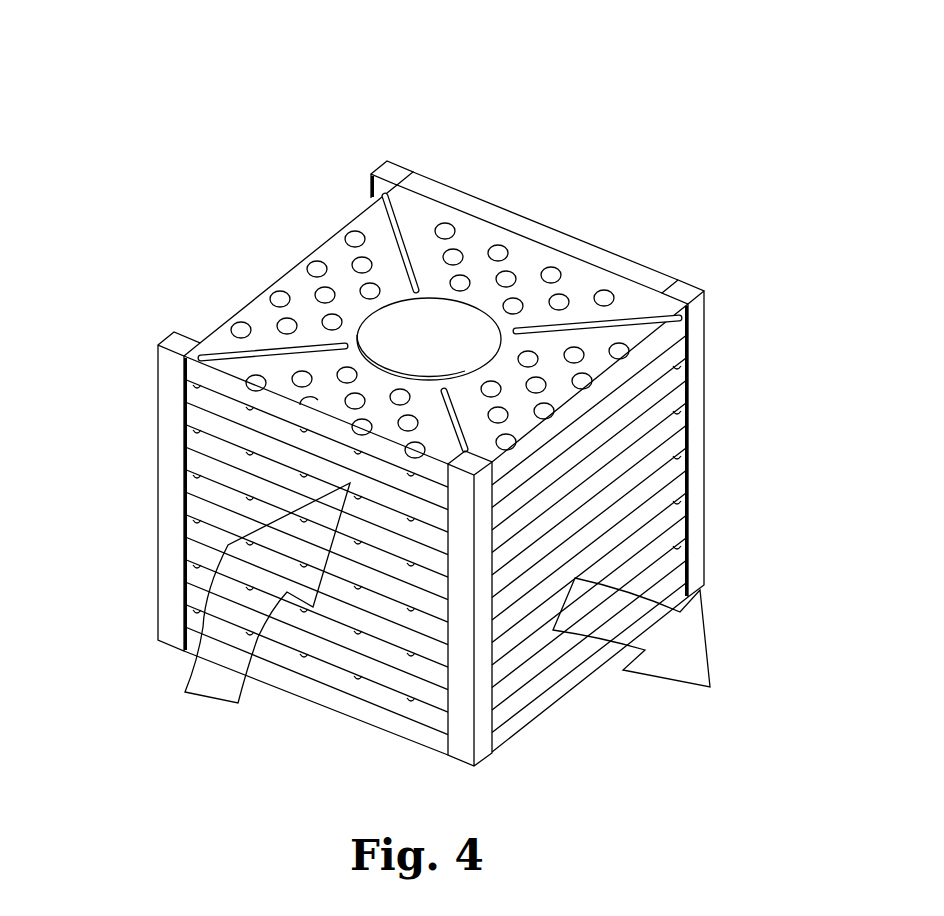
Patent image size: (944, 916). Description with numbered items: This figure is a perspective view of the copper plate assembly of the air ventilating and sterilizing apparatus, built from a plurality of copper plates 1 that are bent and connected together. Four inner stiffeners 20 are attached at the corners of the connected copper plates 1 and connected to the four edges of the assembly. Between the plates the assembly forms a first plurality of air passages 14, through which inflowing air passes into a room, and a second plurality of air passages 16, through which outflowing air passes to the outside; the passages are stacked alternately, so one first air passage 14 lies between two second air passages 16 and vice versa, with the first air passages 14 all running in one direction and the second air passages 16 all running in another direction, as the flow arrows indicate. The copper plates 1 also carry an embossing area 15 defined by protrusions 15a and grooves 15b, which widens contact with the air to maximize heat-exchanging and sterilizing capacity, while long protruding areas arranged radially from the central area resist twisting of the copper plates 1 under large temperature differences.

The copper plate 1 is at (288, 258).
The first plurality of air passages 14 is at (578, 640).
The top plate 15 is at (68, 257).
The protrusions 15a is at (284, 300).
The grooves 15b is at (200, 340).
The second plurality of air passages 16 is at (323, 668).
The inner stiffeners 20 is at (398, 160).